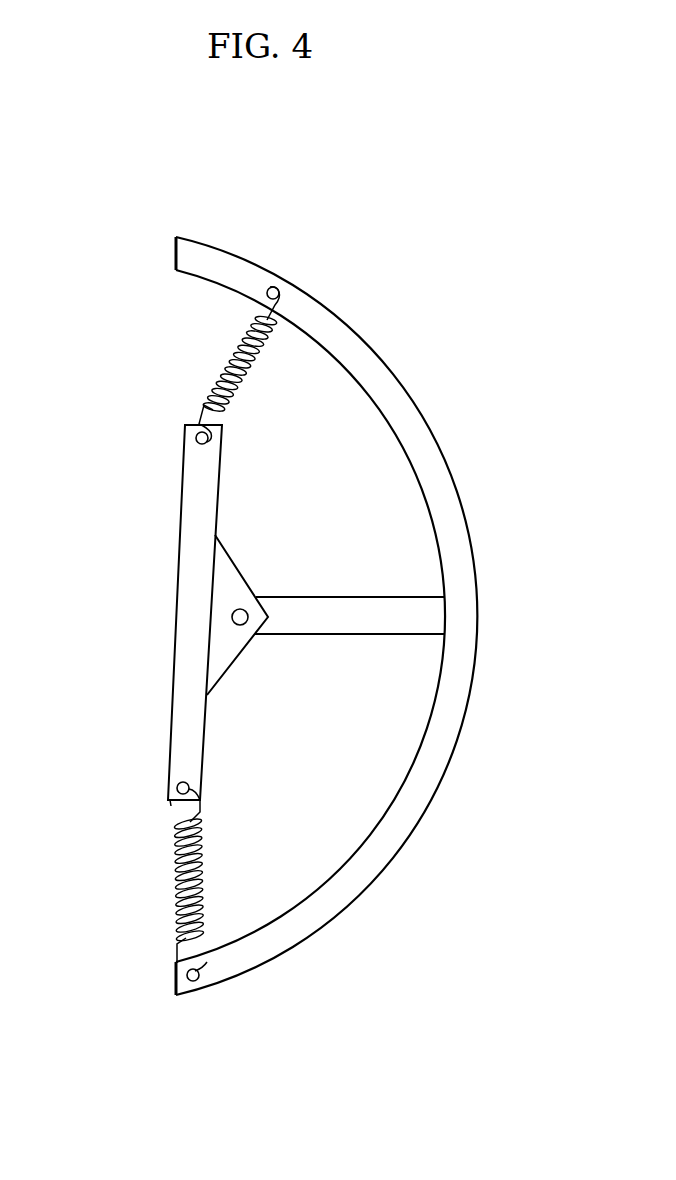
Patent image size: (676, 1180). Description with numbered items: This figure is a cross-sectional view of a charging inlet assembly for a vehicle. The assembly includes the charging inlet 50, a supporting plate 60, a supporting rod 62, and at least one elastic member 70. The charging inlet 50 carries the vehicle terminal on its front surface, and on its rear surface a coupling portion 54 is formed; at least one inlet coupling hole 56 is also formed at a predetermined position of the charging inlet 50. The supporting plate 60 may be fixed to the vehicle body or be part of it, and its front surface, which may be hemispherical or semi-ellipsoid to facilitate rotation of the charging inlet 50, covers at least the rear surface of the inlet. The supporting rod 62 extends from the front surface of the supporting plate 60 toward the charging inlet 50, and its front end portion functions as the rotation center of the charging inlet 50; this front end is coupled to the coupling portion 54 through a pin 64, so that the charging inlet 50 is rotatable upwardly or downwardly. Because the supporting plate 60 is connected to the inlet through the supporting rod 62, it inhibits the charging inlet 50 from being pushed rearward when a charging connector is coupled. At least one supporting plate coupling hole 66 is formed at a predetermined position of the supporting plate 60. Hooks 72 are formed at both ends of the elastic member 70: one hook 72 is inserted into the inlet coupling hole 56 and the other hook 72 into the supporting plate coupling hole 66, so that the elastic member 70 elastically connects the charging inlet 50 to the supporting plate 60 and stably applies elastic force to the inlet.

The charging inlet 50 is at (165, 532).
The coupling portion 54 is at (227, 583).
The inlet coupling hole 56 is at (178, 787).
The supporting plate 60 is at (447, 515).
The supporting rod 62 is at (383, 625).
The pin 64 is at (240, 628).
The supporting plate coupling hole 66 is at (275, 287).
The elastic member 70 is at (224, 364).
The hook 72 is at (280, 308).